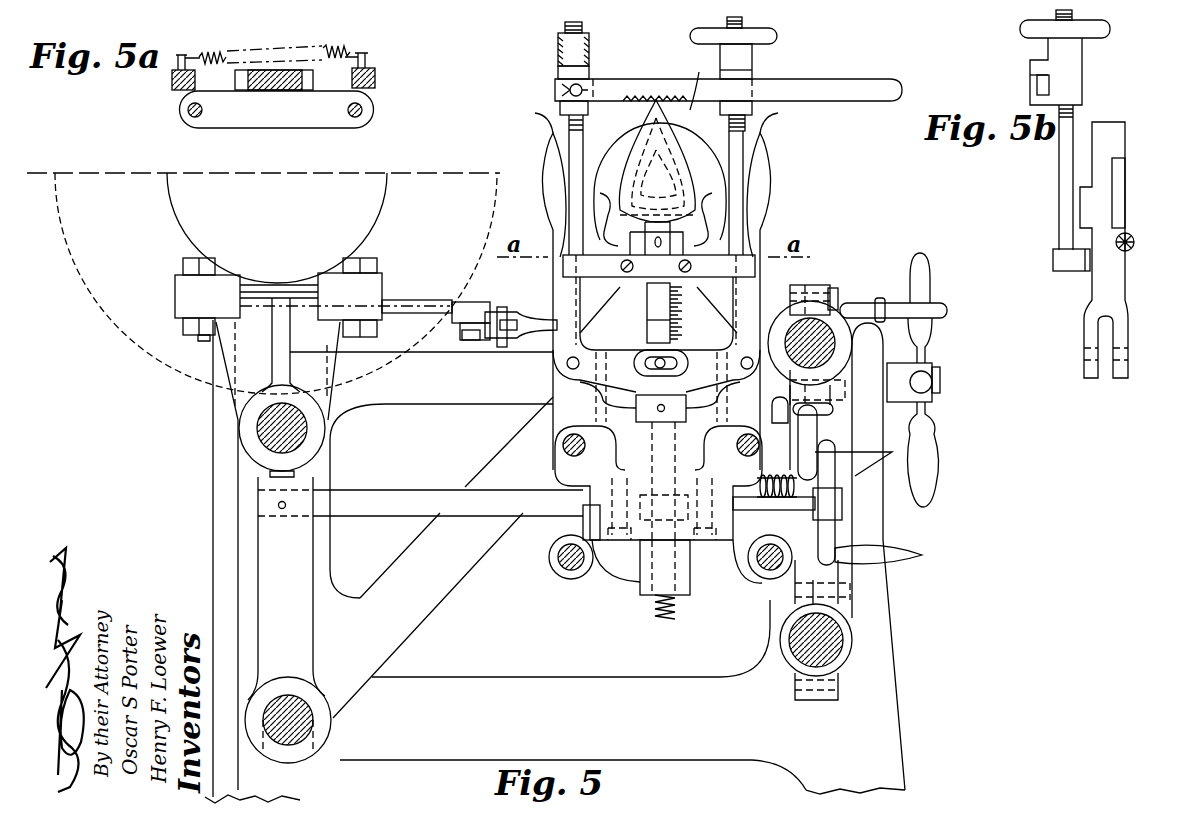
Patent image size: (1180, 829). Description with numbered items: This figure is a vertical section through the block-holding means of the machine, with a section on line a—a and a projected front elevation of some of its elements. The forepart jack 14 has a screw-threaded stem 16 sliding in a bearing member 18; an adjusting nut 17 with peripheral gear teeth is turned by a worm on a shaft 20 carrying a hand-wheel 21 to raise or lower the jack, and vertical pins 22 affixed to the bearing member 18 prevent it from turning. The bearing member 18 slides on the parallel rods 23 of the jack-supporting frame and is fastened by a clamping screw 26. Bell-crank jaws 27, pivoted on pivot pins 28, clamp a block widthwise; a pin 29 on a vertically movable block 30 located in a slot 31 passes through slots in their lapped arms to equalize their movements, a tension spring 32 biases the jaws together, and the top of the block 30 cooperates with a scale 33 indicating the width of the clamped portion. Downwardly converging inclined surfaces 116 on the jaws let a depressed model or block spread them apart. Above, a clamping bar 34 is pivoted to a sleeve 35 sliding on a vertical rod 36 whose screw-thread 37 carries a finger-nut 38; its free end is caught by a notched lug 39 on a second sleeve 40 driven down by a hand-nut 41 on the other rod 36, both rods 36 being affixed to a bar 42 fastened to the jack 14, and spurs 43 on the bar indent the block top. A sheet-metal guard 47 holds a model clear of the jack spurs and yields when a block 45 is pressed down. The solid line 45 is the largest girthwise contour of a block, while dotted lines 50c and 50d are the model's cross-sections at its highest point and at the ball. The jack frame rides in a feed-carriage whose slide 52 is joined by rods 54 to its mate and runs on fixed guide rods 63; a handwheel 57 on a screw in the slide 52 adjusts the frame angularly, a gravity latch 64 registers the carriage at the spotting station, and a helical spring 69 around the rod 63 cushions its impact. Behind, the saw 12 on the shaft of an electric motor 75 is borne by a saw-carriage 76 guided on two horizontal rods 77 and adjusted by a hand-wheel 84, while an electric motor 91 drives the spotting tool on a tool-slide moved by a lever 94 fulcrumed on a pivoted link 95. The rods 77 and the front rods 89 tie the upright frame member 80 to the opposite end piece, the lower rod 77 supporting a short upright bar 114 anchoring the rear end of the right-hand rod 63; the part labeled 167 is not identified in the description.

In FIG. 5, the saw 12 is at (68, 254).
In FIG. 5A, the forepart jack 14 is at (296, 88).
In FIG. 5, the forepart jack 14 is at (586, 389).
In FIG. 5, the screw-threaded stem 16 is at (661, 606).
In FIG. 5, the adjusting nut 17 is at (650, 496).
In FIG. 5, the bearing member 18 is at (640, 578).
In FIG. 5, the shaft 20 is at (746, 502).
In FIG. 5, the hand-wheel 21 is at (835, 482).
In FIG. 5, the vertical pins 22 is at (596, 415).
In FIG. 5, the parallel rods 23 is at (563, 445).
In FIG. 5, the clamping screw 26 is at (772, 408).
In FIG. 5A, the jaws 27 is at (172, 82).
In FIG. 5B, the jaws 27 is at (1117, 131).
In FIG. 5, the jaws 27 is at (546, 150).
In FIG. 5, the pivot pins 28 is at (567, 362).
In FIG. 5, the pin 29 is at (658, 360).
In FIG. 5, the vertically movable block 30 is at (648, 322).
In FIG. 5, the slot 31 is at (647, 293).
In FIG. 5A, the tension spring 32 is at (325, 48).
In FIG. 5B, the tension spring 32 is at (1131, 250).
In FIG. 5, the scale 33 is at (684, 308).
In FIG. 5B, the clamping bar 34 is at (1037, 87).
In FIG. 5, the clamping bar 34 is at (852, 80).
In FIG. 5, the sleeve 35 is at (558, 72).
In FIG. 5A, the vertical rod 36 is at (188, 110).
In FIG. 5B, the vertical rod 36 is at (1059, 166).
In FIG. 5, the vertical rod 36 is at (573, 165).
In FIG. 5, the screw-thread 37 is at (565, 26).
In FIG. 5, the finger-nut 38 is at (558, 50).
In FIG. 5B, the notched lug 39 is at (1030, 66).
In FIG. 5, the notched lug 39 is at (752, 67).
In FIG. 5B, the sleeve 40 is at (1080, 80).
In FIG. 5, the sleeve 40 is at (752, 108).
In FIG. 5B, the hand-nut 41 is at (1020, 27).
In FIG. 5, the hand-nut 41 is at (777, 36).
In FIG. 5A, the bar 42 is at (248, 118).
In FIG. 5B, the bar 42 is at (1053, 260).
In FIG. 5, the bar 42 is at (604, 268).
In FIG. 5, the spurs 43 is at (640, 103).
In FIG. 5, the block 45 is at (603, 186).
In FIG. 5, the sheet-metal guard 47 is at (659, 267).
In FIG. 5, the dotted line contour 50c is at (682, 148).
In FIG. 5, the dotted line contour 50d is at (663, 224).
In FIG. 5, the slide 52 is at (583, 522).
In FIG. 5, the rods 54 is at (556, 560).
In FIG. 5, the handwheel 57 is at (818, 428).
In FIG. 5, the guide rods 63 is at (367, 506).
In FIG. 5, the gravity latch 64 is at (890, 452).
In FIG. 5, the helical spring 69 is at (770, 500).
In FIG. 5, the electric motor 75 is at (167, 193).
In FIG. 5, the saw-carriage 76 is at (422, 308).
In FIG. 5, the horizontal rods 77 is at (308, 430).
In FIG. 5, the frame member 80 is at (213, 388).
In FIG. 5, the hand-wheel 84 is at (921, 266).
In FIG. 5, the rods 89 is at (812, 335).
In FIG. 5, the electric motor 91 is at (688, 82).
In FIG. 5, the lever 94 is at (492, 343).
In FIG. 5, the pivoted link 95 is at (465, 324).
In FIG. 5, the short upright bar 114 is at (313, 635).
In FIG. 5, the inclined surfaces 116 is at (778, 185).
In FIG. 5, the bearing cap 167 is at (842, 606).